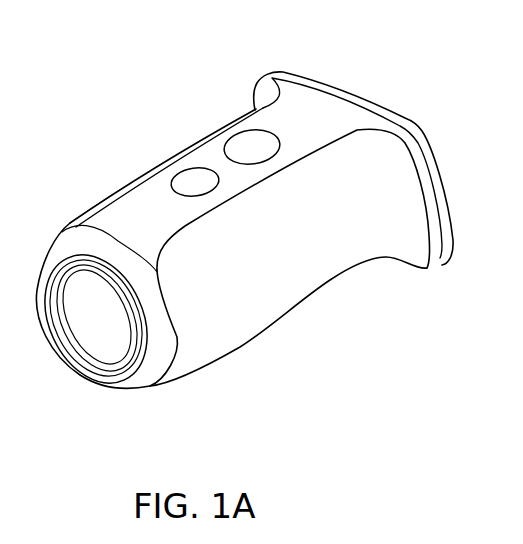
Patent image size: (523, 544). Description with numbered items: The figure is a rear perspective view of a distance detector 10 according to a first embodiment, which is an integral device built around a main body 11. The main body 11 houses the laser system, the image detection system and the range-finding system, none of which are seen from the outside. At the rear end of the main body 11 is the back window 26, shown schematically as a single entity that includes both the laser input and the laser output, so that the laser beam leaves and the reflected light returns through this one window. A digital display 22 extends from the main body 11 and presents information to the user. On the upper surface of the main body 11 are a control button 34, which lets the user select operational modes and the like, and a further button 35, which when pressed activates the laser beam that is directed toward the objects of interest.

The distance detector 10 is at (138, 48).
The main body 11 is at (275, 271).
The digital display 22 is at (413, 100).
The back window 26 is at (107, 318).
The control button 34 is at (253, 143).
The button 35 is at (192, 173).